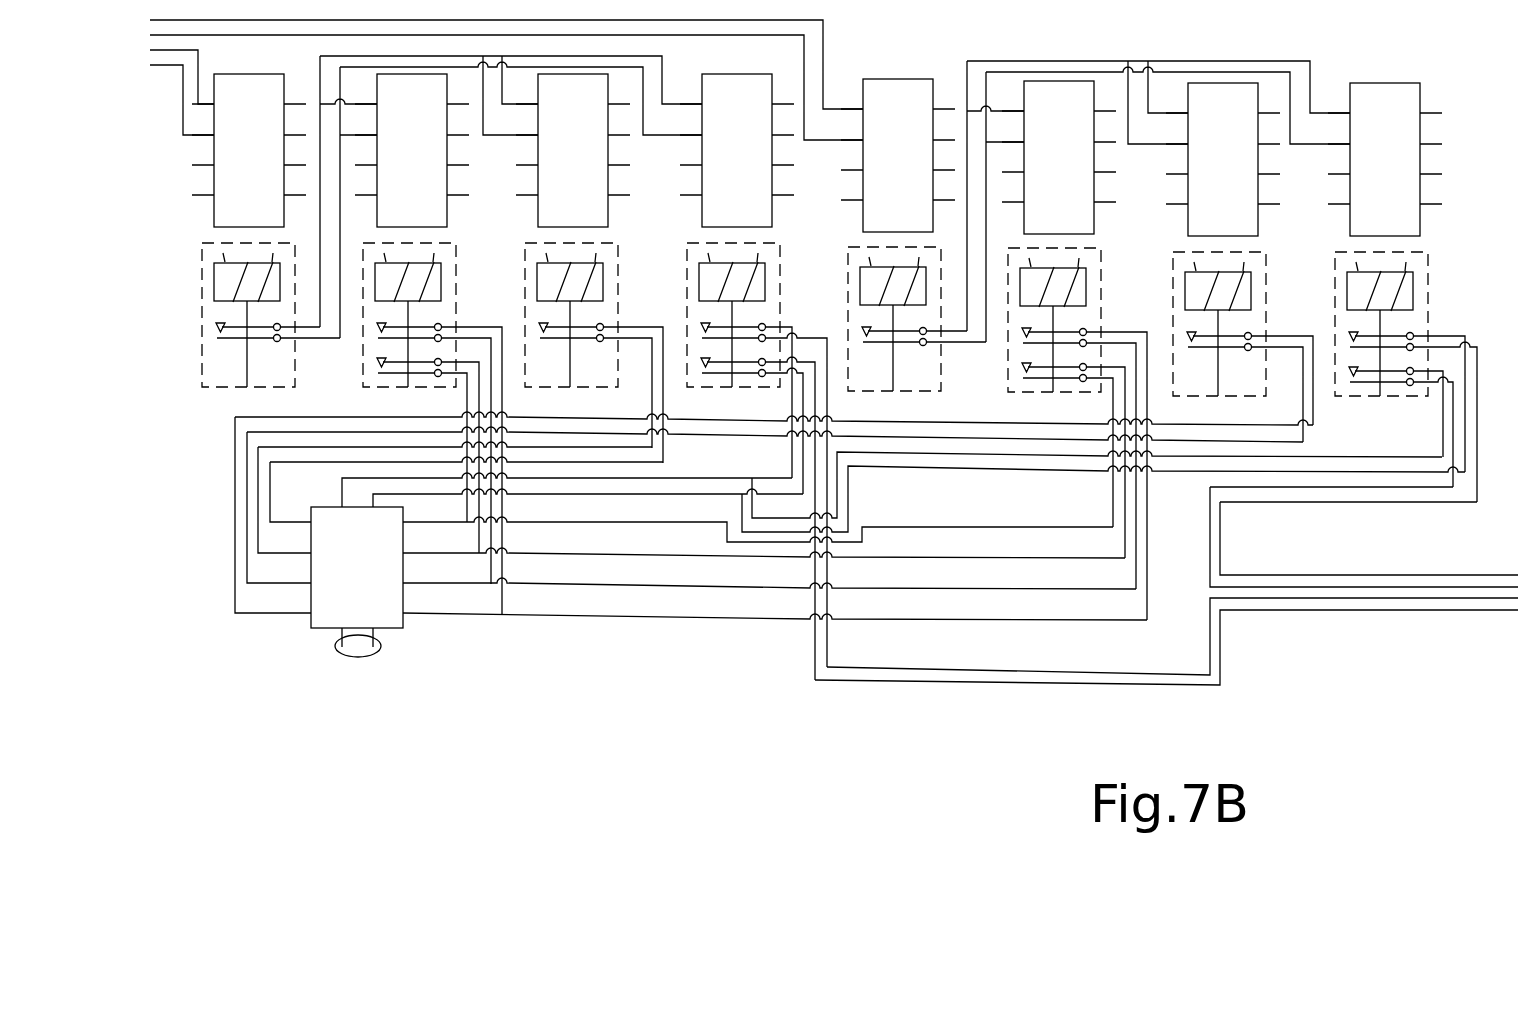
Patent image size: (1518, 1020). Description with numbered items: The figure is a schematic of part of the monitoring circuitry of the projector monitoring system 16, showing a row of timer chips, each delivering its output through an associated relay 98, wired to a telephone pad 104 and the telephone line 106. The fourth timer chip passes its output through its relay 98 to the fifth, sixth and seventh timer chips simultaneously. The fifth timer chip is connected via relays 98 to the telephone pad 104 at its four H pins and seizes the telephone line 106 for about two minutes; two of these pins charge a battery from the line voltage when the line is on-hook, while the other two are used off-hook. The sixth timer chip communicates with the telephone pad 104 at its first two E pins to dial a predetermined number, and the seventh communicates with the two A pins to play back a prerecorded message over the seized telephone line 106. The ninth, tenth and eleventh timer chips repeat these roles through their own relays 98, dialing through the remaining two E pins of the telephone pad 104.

The projector monitoring system 16 is at (929, 20).
The relay 98 is at (200, 375).
The telephone pad 104 is at (310, 620).
The telephone line 106 is at (383, 640).